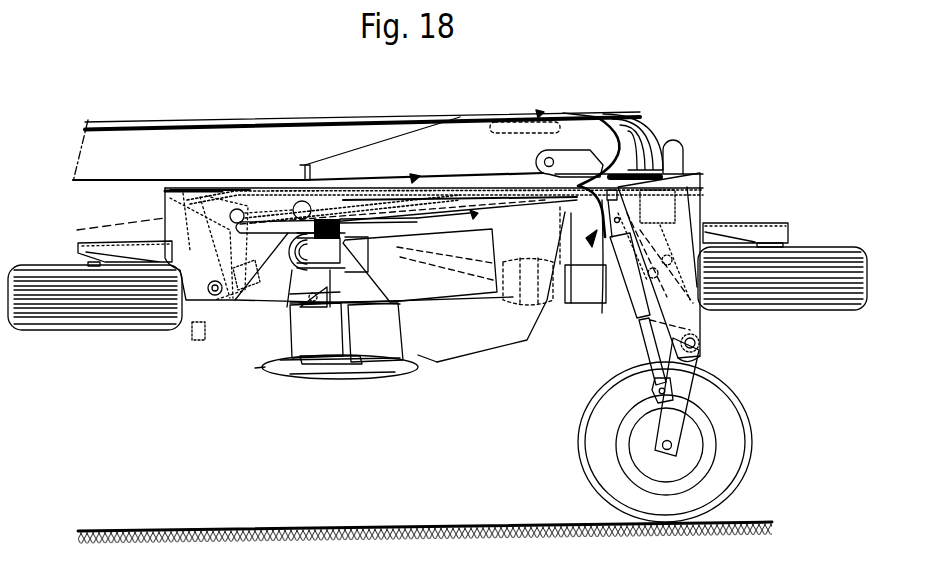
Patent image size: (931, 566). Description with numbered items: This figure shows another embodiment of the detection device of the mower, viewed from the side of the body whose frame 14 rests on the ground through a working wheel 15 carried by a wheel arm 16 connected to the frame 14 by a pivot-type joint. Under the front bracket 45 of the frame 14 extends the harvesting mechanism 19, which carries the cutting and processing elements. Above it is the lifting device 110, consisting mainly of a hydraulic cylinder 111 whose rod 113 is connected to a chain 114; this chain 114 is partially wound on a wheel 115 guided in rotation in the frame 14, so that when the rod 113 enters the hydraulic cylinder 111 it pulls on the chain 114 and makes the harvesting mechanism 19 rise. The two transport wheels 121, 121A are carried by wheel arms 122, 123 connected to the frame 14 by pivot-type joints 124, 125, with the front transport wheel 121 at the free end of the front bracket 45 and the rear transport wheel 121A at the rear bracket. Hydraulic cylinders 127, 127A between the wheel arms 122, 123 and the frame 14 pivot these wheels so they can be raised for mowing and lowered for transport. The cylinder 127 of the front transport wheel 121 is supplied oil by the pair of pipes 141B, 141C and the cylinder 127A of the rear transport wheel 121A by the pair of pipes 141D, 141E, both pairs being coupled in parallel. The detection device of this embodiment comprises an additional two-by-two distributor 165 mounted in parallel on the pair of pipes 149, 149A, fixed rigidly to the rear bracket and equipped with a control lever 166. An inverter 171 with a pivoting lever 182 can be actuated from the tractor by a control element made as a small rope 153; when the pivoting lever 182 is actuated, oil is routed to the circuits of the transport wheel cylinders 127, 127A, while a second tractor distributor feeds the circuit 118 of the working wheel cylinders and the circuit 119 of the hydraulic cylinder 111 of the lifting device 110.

The frame 14 is at (707, 337).
The working wheel 15 is at (600, 407).
The wheel arm 16 is at (680, 418).
The harvesting mechanism 19 is at (265, 387).
The front bracket 45 is at (165, 196).
The lifting device 110 is at (418, 180).
The hydraulic cylinder 111 is at (406, 258).
The rod 113 is at (368, 185).
The chain 114 is at (278, 184).
The wheel 115 is at (300, 175).
The circuit 118 is at (590, 240).
The circuit 119 is at (480, 220).
The transport wheel 121 is at (97, 323).
The transport wheel 121A is at (842, 305).
The wheel arm 122 is at (67, 262).
The wheel arm 123 is at (790, 233).
The pivot-type joint 124 is at (217, 300).
The pivot-type joint 125 is at (706, 318).
The hydraulic cylinder 127 is at (90, 230).
The hydraulic cylinder 127A is at (712, 178).
The pipe 141B is at (191, 184).
The pipe 141C is at (218, 186).
The pipe 141D is at (678, 173).
The pipe 141E is at (707, 213).
The pipe 149 is at (690, 170).
The pipe 149A is at (700, 172).
The small rope 153 is at (452, 115).
The 2/2 distributor 165 is at (703, 193).
The control lever 166 is at (609, 305).
The inverter 171 is at (515, 110).
The pivoting lever 182 is at (540, 113).